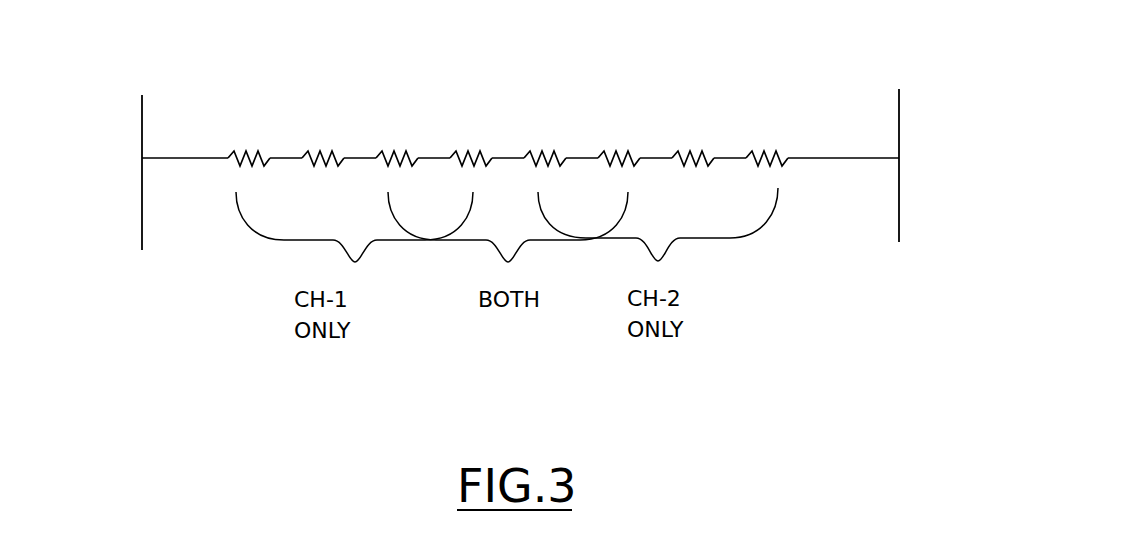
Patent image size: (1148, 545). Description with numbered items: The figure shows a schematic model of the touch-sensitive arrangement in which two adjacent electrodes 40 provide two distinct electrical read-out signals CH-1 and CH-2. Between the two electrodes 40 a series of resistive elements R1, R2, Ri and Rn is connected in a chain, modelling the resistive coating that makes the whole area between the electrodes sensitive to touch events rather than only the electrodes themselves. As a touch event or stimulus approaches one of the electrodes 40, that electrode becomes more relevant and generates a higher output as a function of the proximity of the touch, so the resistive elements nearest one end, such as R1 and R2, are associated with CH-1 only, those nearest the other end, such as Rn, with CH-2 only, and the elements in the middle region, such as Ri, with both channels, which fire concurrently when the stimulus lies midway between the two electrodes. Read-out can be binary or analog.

The electrodes 40 is at (502, 128).
The resistive element R1 is at (249, 126).
The resistive element R2 is at (323, 126).
The resistive element Ri is at (619, 126).
The resistive element Rn is at (766, 126).
The electrical binary read-out signal CH-1 is at (149, 197).
The electrical binary read-out signal CH-2 is at (906, 192).